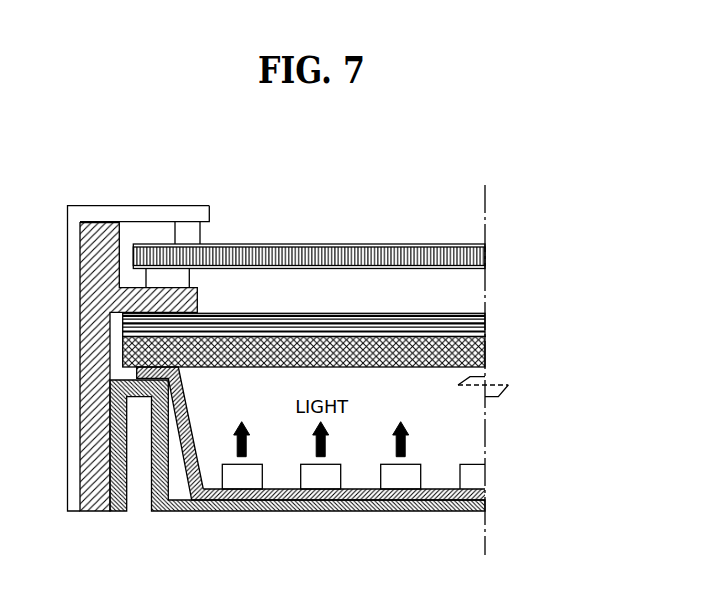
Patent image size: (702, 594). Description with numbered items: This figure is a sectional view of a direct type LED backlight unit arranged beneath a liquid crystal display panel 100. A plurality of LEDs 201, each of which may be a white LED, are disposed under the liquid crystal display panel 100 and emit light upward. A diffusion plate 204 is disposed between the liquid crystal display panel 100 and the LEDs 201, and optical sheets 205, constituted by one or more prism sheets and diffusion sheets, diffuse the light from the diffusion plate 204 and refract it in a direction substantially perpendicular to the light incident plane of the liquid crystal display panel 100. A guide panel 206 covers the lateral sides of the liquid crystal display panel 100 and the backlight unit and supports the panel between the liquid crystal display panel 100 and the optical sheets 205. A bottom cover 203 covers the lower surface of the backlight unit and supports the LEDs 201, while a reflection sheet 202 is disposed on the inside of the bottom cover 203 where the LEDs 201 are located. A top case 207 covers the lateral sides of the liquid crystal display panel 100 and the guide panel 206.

The liquid crystal display panel 100 is at (478, 258).
The LEDs 201 is at (323, 478).
The reflection sheet 202 is at (372, 495).
The bottom cover 203 is at (429, 507).
The diffusion plate 204 is at (480, 352).
The optical sheets 205 is at (483, 322).
The guide panel 206 is at (90, 232).
The top case 207 is at (167, 211).